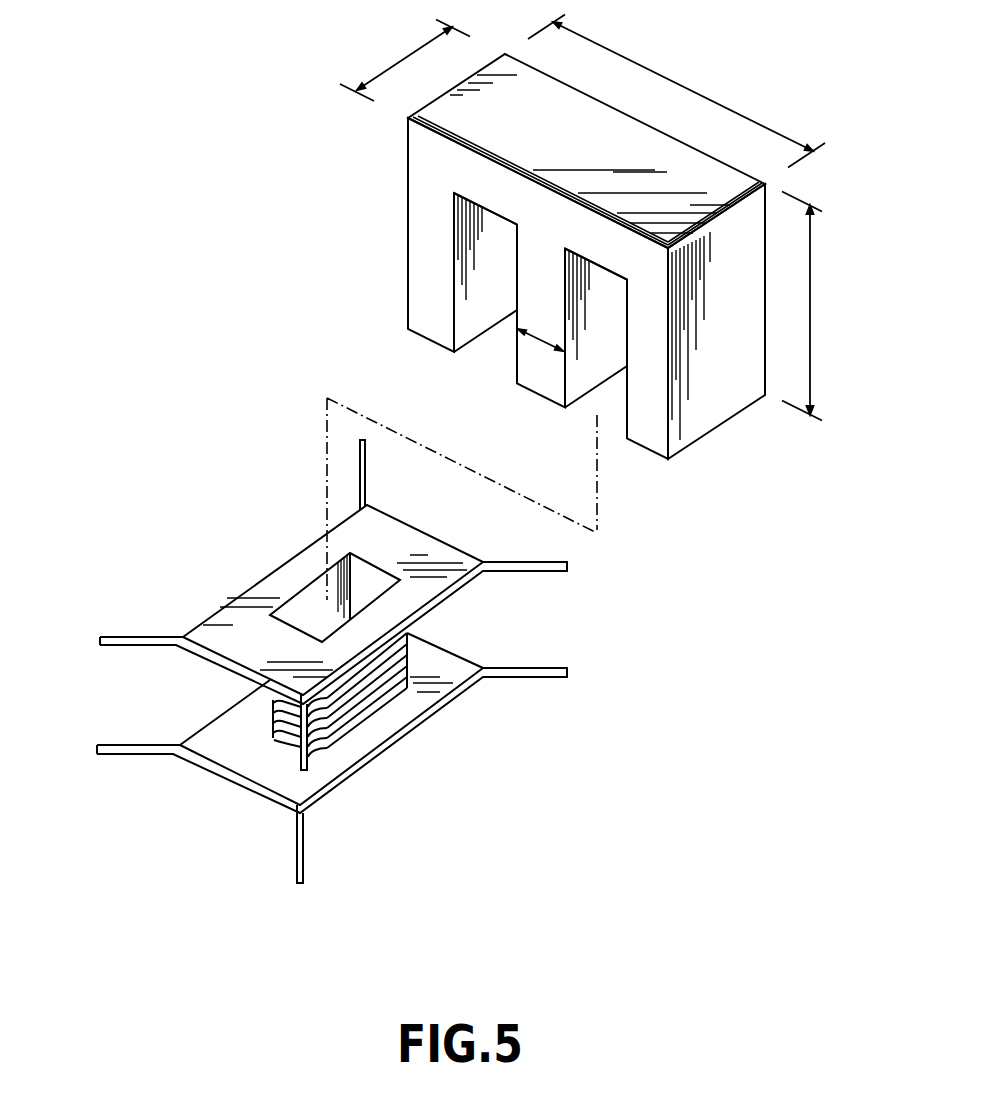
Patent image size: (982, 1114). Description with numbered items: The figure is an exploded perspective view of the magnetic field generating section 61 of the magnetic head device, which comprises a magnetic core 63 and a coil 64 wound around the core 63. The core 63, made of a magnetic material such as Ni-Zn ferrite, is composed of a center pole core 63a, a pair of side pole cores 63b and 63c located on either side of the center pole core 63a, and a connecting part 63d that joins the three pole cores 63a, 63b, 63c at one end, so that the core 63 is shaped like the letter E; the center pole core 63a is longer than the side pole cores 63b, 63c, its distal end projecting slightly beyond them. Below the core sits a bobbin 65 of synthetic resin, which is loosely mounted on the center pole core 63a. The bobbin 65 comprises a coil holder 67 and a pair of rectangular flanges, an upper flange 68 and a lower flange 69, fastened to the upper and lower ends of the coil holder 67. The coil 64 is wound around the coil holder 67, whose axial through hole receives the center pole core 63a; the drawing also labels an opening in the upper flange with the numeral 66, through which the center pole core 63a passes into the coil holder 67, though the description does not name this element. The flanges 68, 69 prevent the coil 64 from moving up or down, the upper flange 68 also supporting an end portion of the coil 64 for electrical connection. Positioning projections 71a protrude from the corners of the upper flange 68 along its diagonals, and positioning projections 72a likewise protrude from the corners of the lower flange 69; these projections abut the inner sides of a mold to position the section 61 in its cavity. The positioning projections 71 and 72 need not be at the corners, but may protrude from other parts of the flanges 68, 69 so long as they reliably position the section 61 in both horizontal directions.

The magnetic field generating section 61 is at (297, 281).
The magnetic core 63 is at (584, 257).
The center pole core 63a is at (538, 388).
The side pole core 63b is at (430, 331).
The side pole core 63c is at (647, 440).
The connecting part 63d is at (575, 112).
The coil 64 is at (410, 668).
The bobbin 65 is at (359, 673).
The hole in upper plate 66 is at (382, 575).
The coil holder 67 is at (332, 748).
The upper flange 68 is at (333, 600).
The lower flange 69 is at (224, 786).
The positioning projection 71 is at (158, 637).
The positioning projection 71a is at (100, 636).
The positioning projection 72 is at (152, 755).
The positioning projection 72a is at (98, 746).